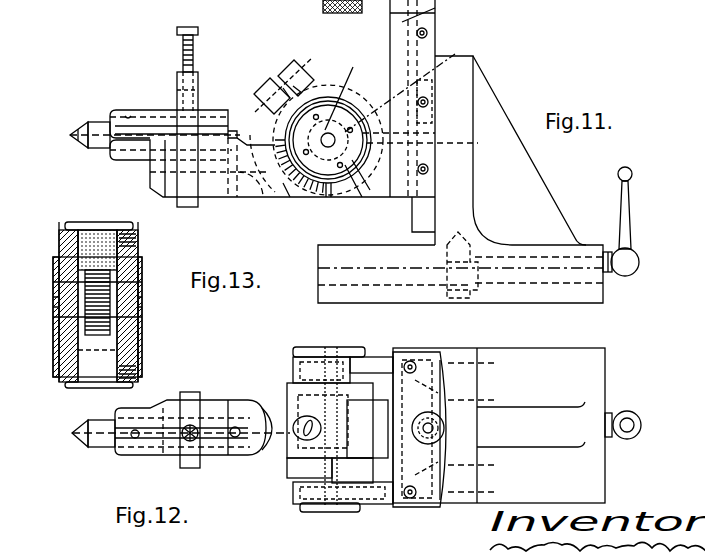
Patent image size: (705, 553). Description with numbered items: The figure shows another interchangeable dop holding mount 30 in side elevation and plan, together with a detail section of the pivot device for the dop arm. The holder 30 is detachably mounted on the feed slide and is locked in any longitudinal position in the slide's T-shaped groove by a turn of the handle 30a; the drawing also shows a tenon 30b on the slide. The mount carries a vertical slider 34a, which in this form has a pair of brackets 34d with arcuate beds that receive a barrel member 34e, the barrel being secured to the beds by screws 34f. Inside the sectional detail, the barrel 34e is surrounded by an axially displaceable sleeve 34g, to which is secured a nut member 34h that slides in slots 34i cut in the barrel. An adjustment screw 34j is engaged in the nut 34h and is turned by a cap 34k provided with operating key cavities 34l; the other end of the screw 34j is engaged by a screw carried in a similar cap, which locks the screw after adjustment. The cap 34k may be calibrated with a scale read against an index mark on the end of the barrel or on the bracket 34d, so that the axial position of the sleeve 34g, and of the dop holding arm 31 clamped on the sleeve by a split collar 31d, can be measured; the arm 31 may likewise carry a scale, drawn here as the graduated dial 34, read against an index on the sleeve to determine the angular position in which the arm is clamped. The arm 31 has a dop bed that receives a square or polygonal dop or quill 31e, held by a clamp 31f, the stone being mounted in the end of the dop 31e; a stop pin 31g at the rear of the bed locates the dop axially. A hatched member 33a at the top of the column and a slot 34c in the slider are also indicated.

In FIG. 11, the dop holding mount 30 is at (501, 91).
In FIG. 12, the dop holding mount 30 is at (605, 380).
In FIG. 11, the handle 30a is at (623, 205).
In FIG. 12, the handle 30a is at (627, 411).
In FIG. 11, the tenon of slide 30b is at (420, 208).
In FIG. 12, the tenon of slide 30b is at (511, 462).
In FIG. 11, the dop holding arm 31 is at (252, 165).
In FIG. 12, the dop holding arm 31 is at (235, 408).
In FIG. 11, the split collar 31d is at (278, 78).
In FIG. 12, the split collar 31d is at (300, 473).
In FIG. 11, the dop or quill 31e is at (153, 110).
In FIG. 12, the dop or quill 31e is at (135, 456).
In FIG. 11, the clamp 31f is at (199, 100).
In FIG. 12, the clamp 31f is at (188, 468).
In FIG. 11, the stop pin 31g is at (237, 133).
In FIG. 12, the stop pin 31g is at (235, 437).
In FIG. 11, the hatched member 33a is at (321, 9).
In FIG. 11, the protractor dial 34 is at (364, 124).
In FIG. 12, the protractor dial 34 is at (300, 398).
In FIG. 11, the vertical slider 34a is at (435, 11).
In FIG. 11, the slot 34c is at (435, 23).
In FIG. 12, the slot 34c is at (531, 394).
In FIG. 11, the bracket 34d is at (365, 80).
In FIG. 12, the bracket 34d is at (410, 508).
In FIG. 11, the barrel member 34e is at (331, 184).
In FIG. 13, the barrel member 34e is at (70, 347).
In FIG. 12, the barrel member 34e is at (300, 368).
In FIG. 11, the screw 34f is at (493, 146).
In FIG. 12, the screw 34f is at (507, 427).
In FIG. 11, the sleeve 34g is at (282, 201).
In FIG. 13, the sleeve 34g is at (138, 345).
In FIG. 12, the sleeve 34g is at (300, 500).
In FIG. 11, the nut member 34h is at (462, 46).
In FIG. 13, the nut member 34h is at (141, 320).
In FIG. 12, the nut member 34h is at (440, 420).
In FIG. 13, the slot 34i is at (65, 305).
In FIG. 12, the slot 34i is at (440, 447).
In FIG. 13, the adjustment screw 34j is at (63, 257).
In FIG. 11, the cap 34k is at (348, 168).
In FIG. 13, the cap 34k is at (73, 381).
In FIG. 12, the cap 34k is at (325, 508).
In FIG. 11, the operating key cavity 34l is at (340, 91).
In FIG. 13, the operating key cavity 34l is at (90, 383).
In FIG. 12, the operating key cavity 34l is at (370, 508).